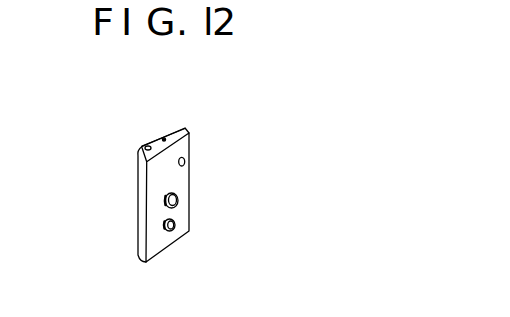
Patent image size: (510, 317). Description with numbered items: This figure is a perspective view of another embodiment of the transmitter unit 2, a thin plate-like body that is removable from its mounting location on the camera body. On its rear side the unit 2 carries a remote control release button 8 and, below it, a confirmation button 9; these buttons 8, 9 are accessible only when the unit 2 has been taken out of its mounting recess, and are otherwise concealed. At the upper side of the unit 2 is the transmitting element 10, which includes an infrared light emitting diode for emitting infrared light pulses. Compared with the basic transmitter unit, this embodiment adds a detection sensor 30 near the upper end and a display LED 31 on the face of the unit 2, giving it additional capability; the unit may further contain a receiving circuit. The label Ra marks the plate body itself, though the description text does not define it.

The rotor blade-like plate member Ra is at (153, 235).
The transmitter unit 2 is at (153, 139).
The transmitting element 10 is at (164, 137).
The detection sensor 30 is at (145, 146).
The display LED 31 is at (186, 160).
The remote control release button 8 is at (176, 198).
The confirmation button 9 is at (175, 225).